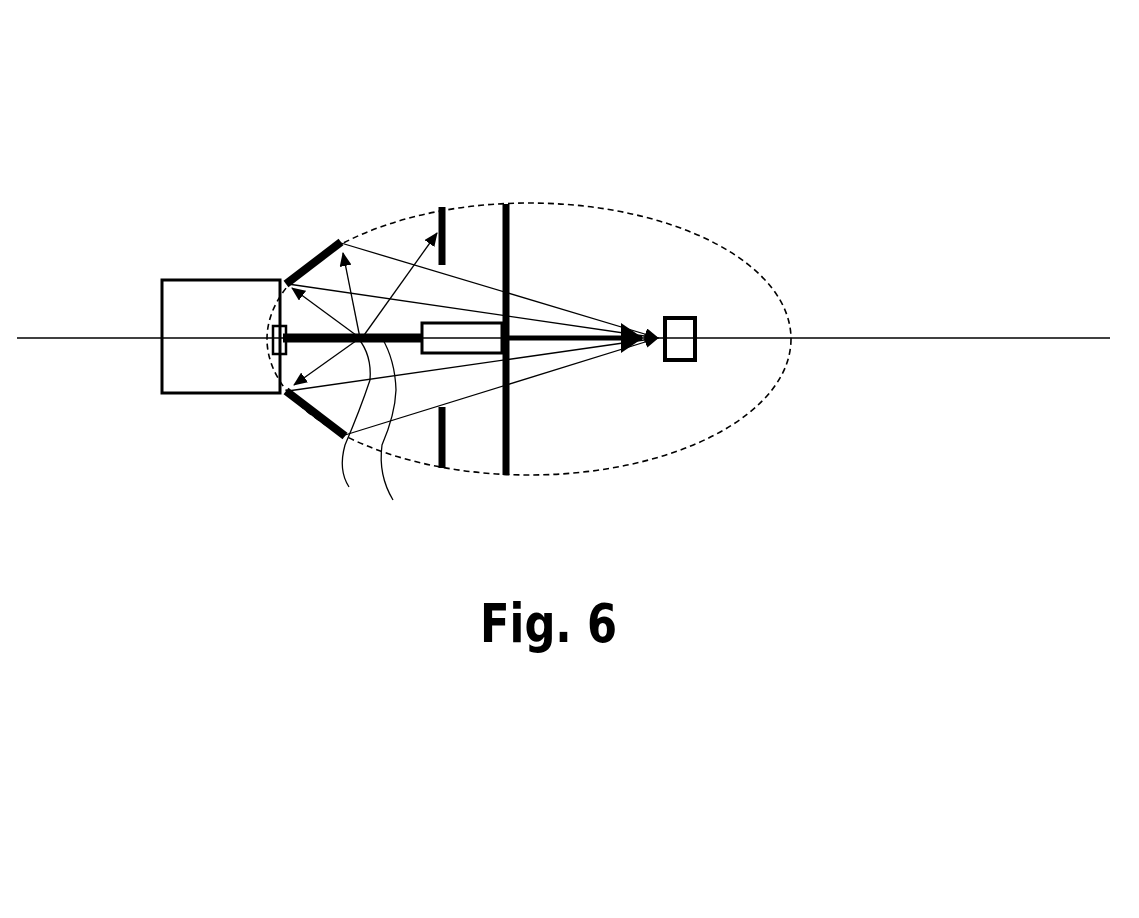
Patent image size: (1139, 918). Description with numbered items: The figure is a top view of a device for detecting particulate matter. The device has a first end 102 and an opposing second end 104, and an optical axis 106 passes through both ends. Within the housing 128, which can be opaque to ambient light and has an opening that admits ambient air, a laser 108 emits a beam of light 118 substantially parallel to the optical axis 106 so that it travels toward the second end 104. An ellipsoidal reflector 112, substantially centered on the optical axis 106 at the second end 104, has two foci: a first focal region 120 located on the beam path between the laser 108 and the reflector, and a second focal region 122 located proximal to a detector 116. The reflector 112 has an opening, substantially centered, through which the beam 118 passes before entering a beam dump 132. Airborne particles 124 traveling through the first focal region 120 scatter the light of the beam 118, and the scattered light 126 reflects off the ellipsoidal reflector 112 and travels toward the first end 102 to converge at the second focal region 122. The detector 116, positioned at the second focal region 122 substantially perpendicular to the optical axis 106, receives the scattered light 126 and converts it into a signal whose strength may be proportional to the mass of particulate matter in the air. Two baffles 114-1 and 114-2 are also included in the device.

The first end 102 is at (768, 118).
The second end 104 is at (529, 116).
The optical axis 106 is at (45, 338).
The laser 108 is at (470, 323).
The ellipsoidal reflector 112 is at (297, 270).
The baffle 114-1 is at (443, 470).
The baffle 114-2 is at (507, 477).
The detector 116 is at (680, 362).
The beam of light 118 is at (399, 433).
The first focal region 120 is at (361, 324).
The second focal region 122 is at (652, 315).
The airborne particles 124 is at (351, 427).
The scattered light 126 is at (338, 258).
The housing 128 is at (757, 265).
The beam dump 132 is at (192, 280).